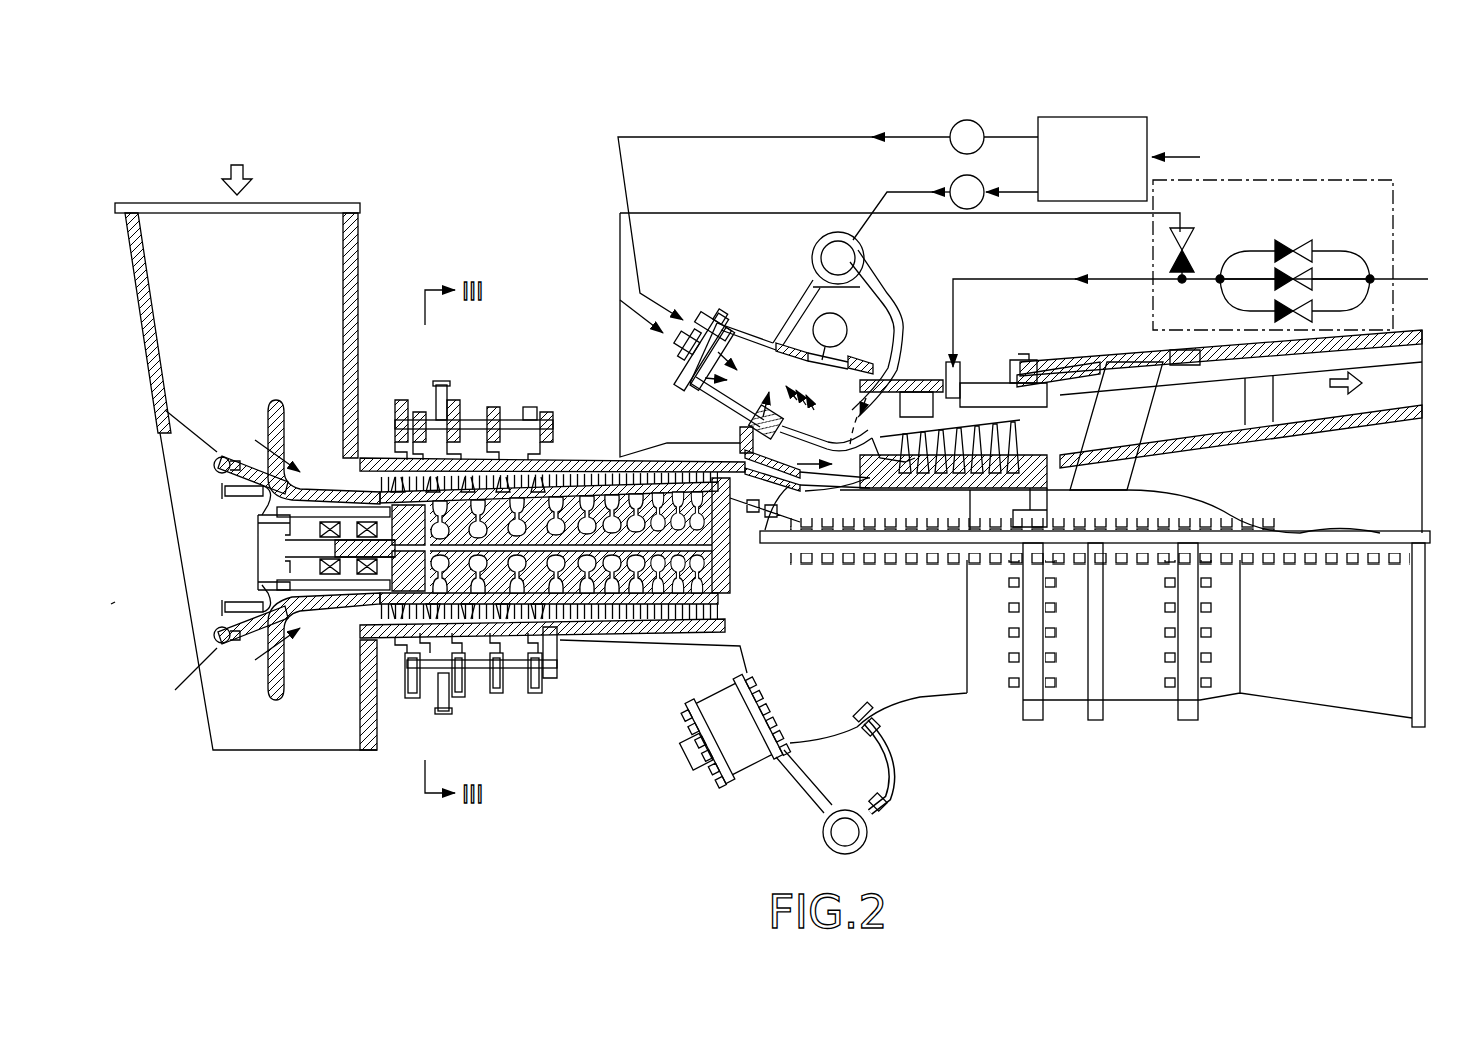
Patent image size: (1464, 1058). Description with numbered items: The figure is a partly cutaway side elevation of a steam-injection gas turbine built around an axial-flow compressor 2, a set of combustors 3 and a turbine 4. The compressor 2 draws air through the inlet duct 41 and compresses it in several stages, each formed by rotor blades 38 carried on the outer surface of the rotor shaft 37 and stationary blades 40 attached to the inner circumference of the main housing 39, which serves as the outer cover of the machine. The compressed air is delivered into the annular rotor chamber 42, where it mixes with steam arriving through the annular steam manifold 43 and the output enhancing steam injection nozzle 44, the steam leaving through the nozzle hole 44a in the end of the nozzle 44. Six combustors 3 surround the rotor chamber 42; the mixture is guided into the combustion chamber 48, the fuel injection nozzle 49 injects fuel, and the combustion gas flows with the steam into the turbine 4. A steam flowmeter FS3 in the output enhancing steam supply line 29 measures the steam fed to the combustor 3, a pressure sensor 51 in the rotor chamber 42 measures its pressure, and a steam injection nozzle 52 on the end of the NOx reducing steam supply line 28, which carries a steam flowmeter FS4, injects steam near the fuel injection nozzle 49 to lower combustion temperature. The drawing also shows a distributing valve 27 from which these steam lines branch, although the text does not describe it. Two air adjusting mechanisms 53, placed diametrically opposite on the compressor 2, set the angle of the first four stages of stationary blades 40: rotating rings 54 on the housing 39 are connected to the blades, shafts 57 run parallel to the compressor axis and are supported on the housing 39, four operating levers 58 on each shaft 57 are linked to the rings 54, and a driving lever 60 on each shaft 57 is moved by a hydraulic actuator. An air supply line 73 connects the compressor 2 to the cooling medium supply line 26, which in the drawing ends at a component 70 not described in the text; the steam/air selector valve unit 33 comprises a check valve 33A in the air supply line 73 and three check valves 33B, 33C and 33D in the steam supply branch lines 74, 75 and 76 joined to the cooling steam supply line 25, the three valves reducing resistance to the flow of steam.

The axial-flow compressor 2 is at (580, 632).
The combustor 3 is at (752, 353).
The turbine 4 is at (985, 395).
The cooling steam supply line 25 is at (1400, 279).
The cooling medium supply line 26 is at (1020, 279).
The distributing valve 27 is at (1072, 117).
The NOx reducing steam supply line 28 is at (722, 137).
The output enhancing steam supply line 29 is at (875, 192).
The steam/air selector valve unit 33 is at (1268, 170).
The check valve 33A is at (1190, 228).
The check valve 33B is at (1283, 240).
The check valve 33C is at (1300, 268).
The check valve 33D is at (1260, 311).
The rotor shaft 37 is at (262, 552).
The rotor blades 38 is at (438, 598).
The main housing 39 is at (582, 462).
The stationary blades 40 is at (350, 440).
The inlet duct 41 is at (357, 272).
The annular rotor chamber 42 is at (878, 385).
The annular steam manifold 43 is at (812, 250).
The output enhancing steam injection nozzle 44 is at (898, 300).
The nozzle hole 44a is at (868, 400).
The combustion chamber 48 is at (752, 420).
The fuel injection nozzle 49 is at (675, 360).
The pressure sensor 51 is at (847, 324).
The steam injection nozzle 52 is at (708, 318).
The air adjusting mechanism 53 is at (522, 372).
The rotating rings 54 is at (538, 462).
The shafts 57 is at (470, 420).
The operating levers 58 is at (535, 406).
The driving lever 60 is at (437, 385).
The bleed valve 70 is at (956, 362).
The air supply line 73 is at (697, 213).
The steam supply branch line 74 is at (1360, 262).
The steam supply branch line 75 is at (1345, 282).
The steam supply branch line 76 is at (1345, 311).
The steam flowmeter FS3 is at (972, 178).
The steam flowmeter FS4 is at (972, 120).